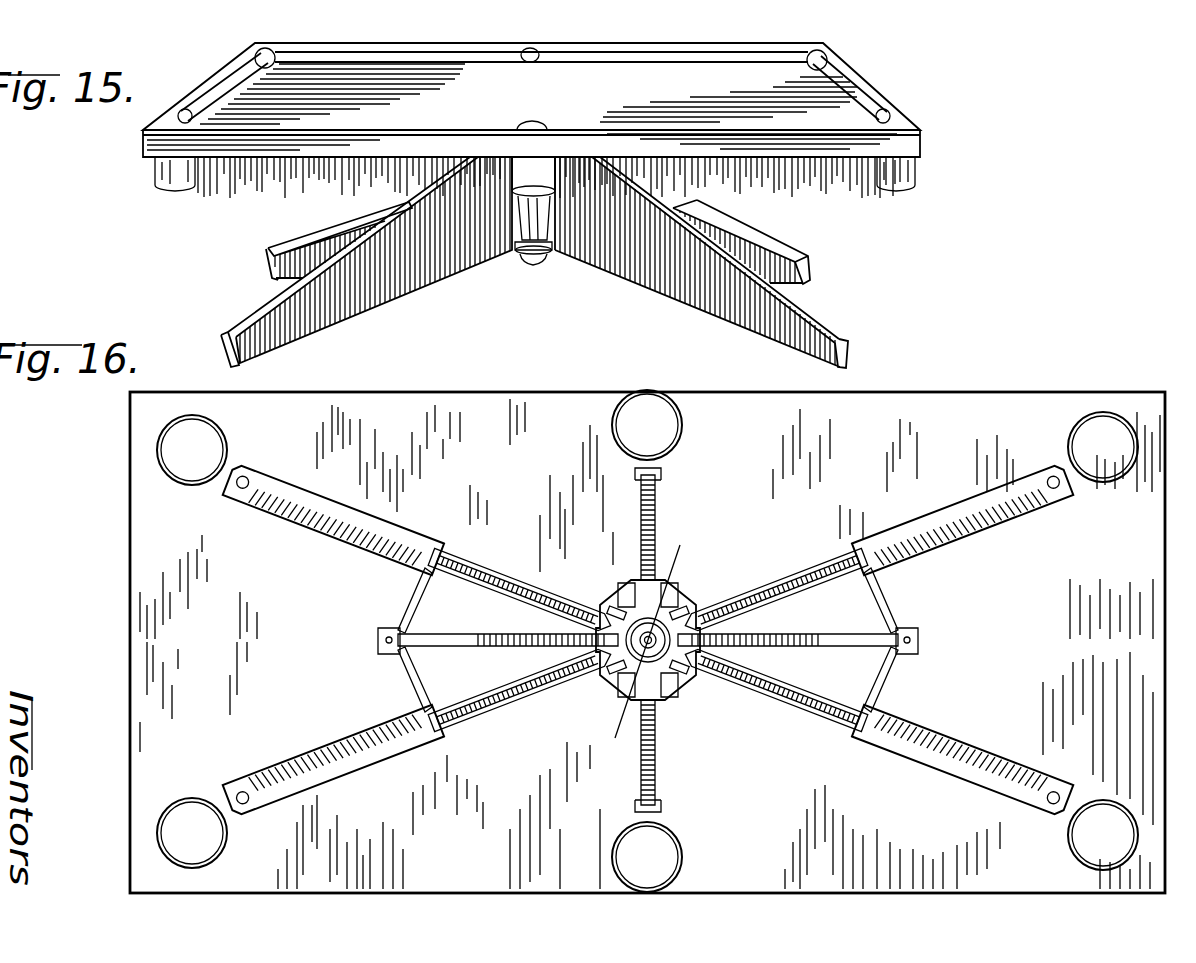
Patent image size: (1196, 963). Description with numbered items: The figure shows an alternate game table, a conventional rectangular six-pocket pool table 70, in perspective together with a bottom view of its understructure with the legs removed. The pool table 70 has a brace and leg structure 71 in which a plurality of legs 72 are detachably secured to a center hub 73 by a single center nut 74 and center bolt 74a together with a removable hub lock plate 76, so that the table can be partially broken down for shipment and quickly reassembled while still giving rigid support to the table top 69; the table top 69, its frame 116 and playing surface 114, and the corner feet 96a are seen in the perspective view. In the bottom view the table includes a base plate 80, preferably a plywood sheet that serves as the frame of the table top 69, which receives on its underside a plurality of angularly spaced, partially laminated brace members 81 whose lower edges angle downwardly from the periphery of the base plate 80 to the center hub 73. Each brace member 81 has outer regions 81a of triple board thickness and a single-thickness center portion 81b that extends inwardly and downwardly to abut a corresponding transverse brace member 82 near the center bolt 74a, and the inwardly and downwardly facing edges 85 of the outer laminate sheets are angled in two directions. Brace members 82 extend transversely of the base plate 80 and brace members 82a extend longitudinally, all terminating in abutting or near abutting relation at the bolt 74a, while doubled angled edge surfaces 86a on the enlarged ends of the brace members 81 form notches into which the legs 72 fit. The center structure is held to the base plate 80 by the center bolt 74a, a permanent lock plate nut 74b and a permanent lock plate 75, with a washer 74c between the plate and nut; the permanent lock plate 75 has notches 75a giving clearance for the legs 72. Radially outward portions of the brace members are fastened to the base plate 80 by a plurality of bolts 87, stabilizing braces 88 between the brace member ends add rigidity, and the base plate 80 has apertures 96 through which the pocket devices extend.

In FIG. 15, the pool table 70 is at (545, 120).
In FIG. 15, the table top 69 is at (838, 96).
In FIG. 15, the table top frame 116 is at (907, 120).
In FIG. 15, the playing surface 114 is at (728, 100).
In FIG. 15, the corner foot 96a is at (160, 183).
In FIG. 15, the brace and leg structure 71 is at (559, 262).
In FIG. 15, the legs 72 is at (272, 253).
In FIG. 15, the center hub 73 is at (523, 213).
In FIG. 16, the center hub 73 is at (634, 659).
In FIG. 15, the center nut 74 is at (530, 250).
In FIG. 15, the center bolt 74a is at (533, 266).
In FIG. 16, the center bolt 74a is at (660, 585).
In FIG. 16, the permanent lock plate nut 74b is at (590, 716).
In FIG. 16, the washer 74c is at (618, 762).
In FIG. 16, the permanent lock plate 75 is at (632, 583).
In FIG. 16, the notches 75a is at (628, 596).
In FIG. 15, the hub lock plate 76 is at (550, 256).
In FIG. 16, the base plate 80 is at (130, 755).
In FIG. 15, the brace members 81 is at (282, 176).
In FIG. 16, the brace members 81 is at (312, 528).
In FIG. 16, the outer regions 81a is at (392, 522).
In FIG. 16, the center portions 81b is at (578, 575).
In FIG. 16, the brace members 82 is at (658, 514).
In FIG. 16, the brace members 82a is at (470, 633).
In FIG. 16, the inwardly and downwardly facing edges 85 is at (478, 557).
In FIG. 16, the doubled angled edge surfaces 86a is at (682, 600).
In FIG. 16, the bolts 87 is at (240, 491).
In FIG. 16, the stabilizing braces 88 is at (420, 598).
In FIG. 16, the apertures 96 is at (218, 440).